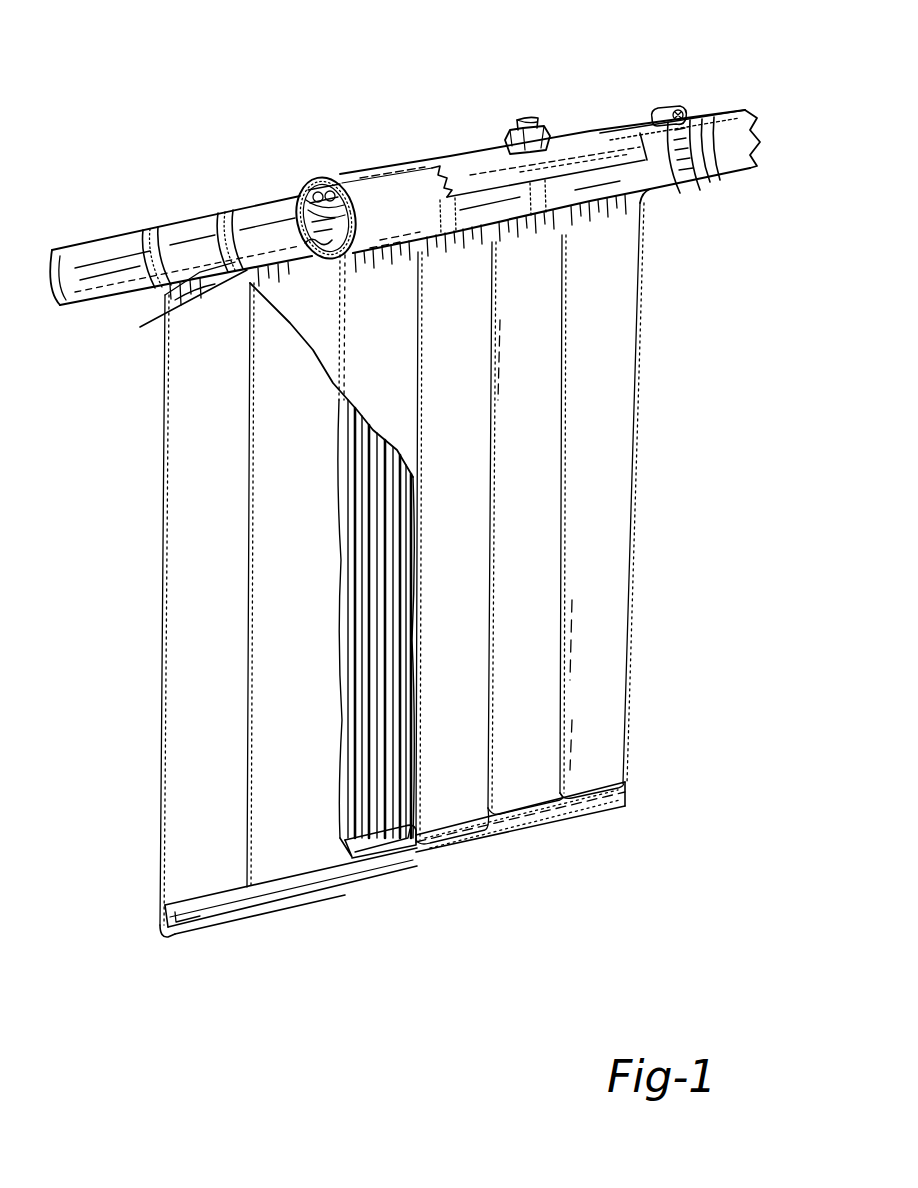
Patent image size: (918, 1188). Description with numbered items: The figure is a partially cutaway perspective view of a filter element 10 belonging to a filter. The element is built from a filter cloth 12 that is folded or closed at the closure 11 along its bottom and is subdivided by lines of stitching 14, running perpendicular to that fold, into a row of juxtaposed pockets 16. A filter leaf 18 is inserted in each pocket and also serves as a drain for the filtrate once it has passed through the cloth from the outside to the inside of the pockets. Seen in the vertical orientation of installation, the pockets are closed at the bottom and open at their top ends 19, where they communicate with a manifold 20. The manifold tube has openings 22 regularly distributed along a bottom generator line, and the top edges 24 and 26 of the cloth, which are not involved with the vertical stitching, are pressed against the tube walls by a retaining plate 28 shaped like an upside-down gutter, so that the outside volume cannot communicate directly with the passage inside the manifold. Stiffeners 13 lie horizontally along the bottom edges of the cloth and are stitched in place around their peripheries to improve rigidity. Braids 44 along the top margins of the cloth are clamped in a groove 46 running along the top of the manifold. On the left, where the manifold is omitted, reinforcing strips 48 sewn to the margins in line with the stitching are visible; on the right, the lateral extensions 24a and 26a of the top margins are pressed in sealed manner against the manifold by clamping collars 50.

The filter element 10 is at (645, 486).
The fold or closure 11 is at (428, 835).
The filter cloth 12 is at (615, 331).
The stiffeners 13 is at (195, 917).
The stitching 14 is at (490, 705).
The pockets 16 is at (388, 341).
The filter leaf 18 is at (376, 757).
The top ends 19 is at (272, 258).
The manifold 20 is at (300, 213).
The openings 22 is at (303, 239).
The top edge 24 is at (420, 185).
The lateral extension 24a is at (657, 157).
The top edge 26 is at (372, 172).
The lateral extension 26a is at (648, 120).
The retaining plate 28 is at (595, 135).
The braids 44 is at (323, 190).
The groove 46 is at (308, 200).
The reinforcing strips 48 is at (222, 220).
The clamping collars 50 is at (697, 118).